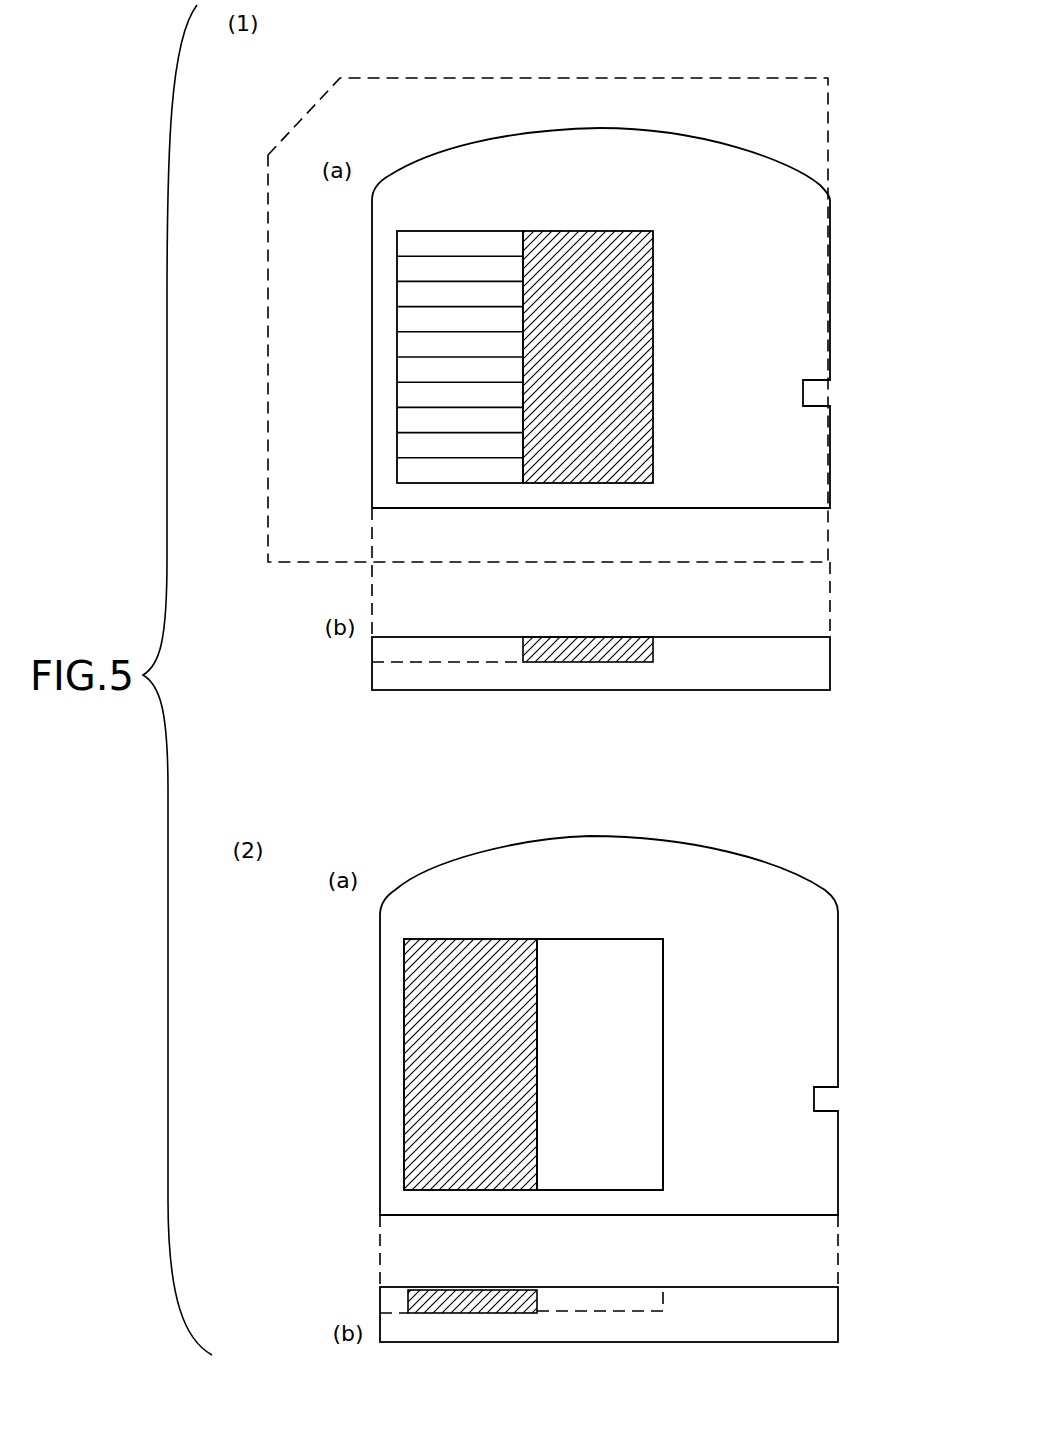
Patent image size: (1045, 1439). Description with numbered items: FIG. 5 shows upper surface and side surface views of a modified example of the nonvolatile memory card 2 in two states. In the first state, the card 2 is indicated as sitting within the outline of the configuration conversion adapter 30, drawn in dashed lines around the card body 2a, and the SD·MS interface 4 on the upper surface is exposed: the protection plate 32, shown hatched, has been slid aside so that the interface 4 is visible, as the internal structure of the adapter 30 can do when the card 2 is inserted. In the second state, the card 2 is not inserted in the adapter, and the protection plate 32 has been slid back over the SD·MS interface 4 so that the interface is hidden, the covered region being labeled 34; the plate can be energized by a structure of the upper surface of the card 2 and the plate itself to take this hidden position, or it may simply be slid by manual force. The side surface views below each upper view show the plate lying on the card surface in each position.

The configuration conversion adapter 30 is at (300, 118).
The nonvolatile memory card 2 is at (830, 224).
The cartridge body 2a is at (793, 305).
The SD·MS interface 4 is at (397, 244).
The protection plate 32 is at (593, 485).
The consumed ink region 34 is at (608, 1190).